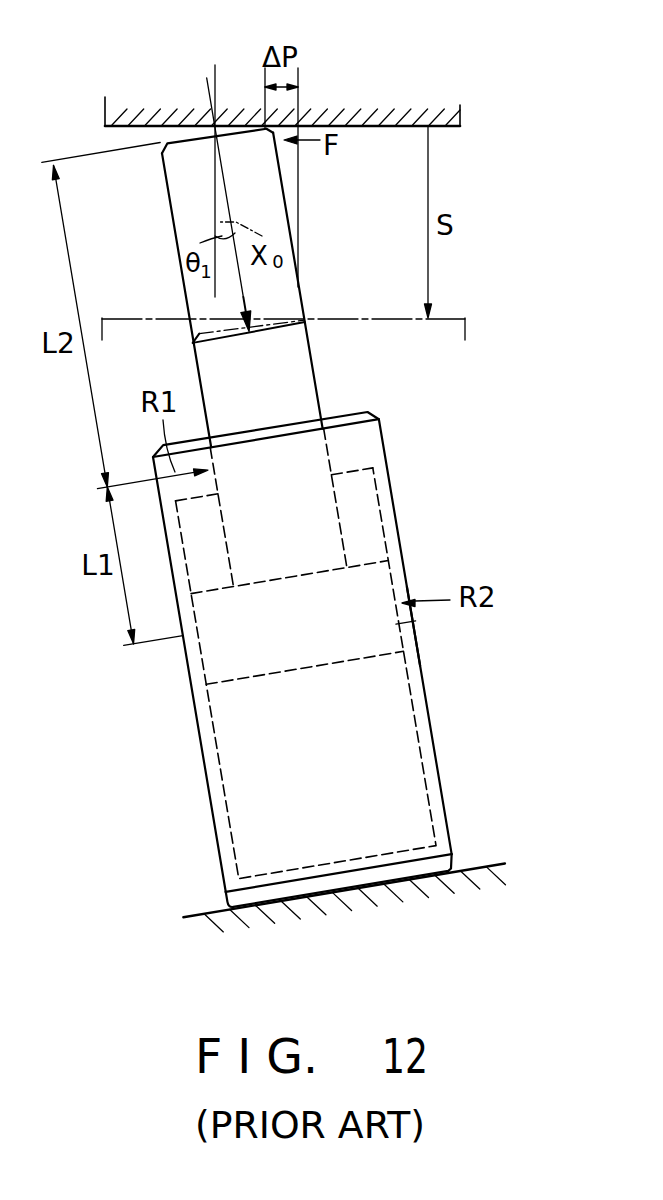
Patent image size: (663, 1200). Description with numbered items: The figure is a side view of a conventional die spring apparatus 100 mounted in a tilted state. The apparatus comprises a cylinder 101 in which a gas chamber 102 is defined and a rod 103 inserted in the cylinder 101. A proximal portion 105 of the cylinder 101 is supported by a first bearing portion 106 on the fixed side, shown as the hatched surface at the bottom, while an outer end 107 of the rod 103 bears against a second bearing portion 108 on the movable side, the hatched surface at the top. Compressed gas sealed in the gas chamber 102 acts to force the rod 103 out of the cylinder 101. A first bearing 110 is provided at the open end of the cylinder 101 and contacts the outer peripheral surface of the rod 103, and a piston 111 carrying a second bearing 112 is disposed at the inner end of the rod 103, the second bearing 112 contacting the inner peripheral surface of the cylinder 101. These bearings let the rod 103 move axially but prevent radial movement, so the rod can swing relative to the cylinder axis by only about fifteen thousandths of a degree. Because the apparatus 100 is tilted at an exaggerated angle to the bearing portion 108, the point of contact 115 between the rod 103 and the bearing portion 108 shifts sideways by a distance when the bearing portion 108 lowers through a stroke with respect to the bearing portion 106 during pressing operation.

The die spring apparatus 100 is at (190, 866).
The cylinder 101 is at (425, 688).
The gas chamber 102 is at (418, 755).
The rod 103 is at (292, 215).
The proximal portion 105 is at (260, 903).
The first bearing portion 106 is at (418, 892).
The outer end 107 is at (190, 143).
The second bearing portion 108 is at (162, 114).
The first bearing 110 is at (218, 480).
The piston 111 is at (307, 672).
The second bearing 112 is at (420, 622).
The point of contact 115 is at (264, 125).